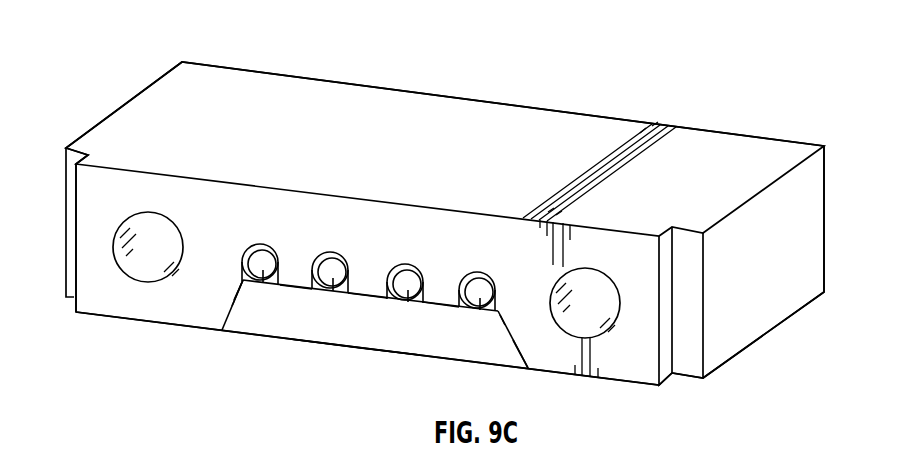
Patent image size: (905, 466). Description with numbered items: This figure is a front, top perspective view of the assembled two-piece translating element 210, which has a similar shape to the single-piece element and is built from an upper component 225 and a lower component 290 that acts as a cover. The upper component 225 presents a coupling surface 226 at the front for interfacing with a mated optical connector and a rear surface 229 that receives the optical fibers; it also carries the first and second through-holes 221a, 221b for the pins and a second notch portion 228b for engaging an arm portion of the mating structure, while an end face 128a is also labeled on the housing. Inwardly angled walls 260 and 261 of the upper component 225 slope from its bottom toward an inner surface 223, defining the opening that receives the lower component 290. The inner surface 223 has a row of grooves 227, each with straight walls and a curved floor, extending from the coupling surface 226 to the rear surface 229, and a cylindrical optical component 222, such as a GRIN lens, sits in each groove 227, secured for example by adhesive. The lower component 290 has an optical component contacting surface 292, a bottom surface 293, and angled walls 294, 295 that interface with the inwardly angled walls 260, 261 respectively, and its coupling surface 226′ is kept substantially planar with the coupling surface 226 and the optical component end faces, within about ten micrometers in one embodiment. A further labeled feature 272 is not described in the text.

The two-piece translating element 210 is at (568, 73).
The rear surface 229 is at (247, 71).
The upper component 225 is at (702, 140).
The second notch portion 228b is at (72, 207).
The end face 128a is at (688, 343).
The coupling surface 226 is at (162, 307).
The coupling surface of the lower component 226′ is at (360, 337).
The bottom surface 293 is at (322, 344).
The lower component 290 is at (383, 352).
The second through-hole 221b is at (119, 233).
The first through-hole 221a is at (589, 268).
The optical component 222 is at (316, 292).
The inwardly angled wall 260 is at (227, 318).
The angled wall 294 is at (241, 282).
The angled wall 295 is at (513, 332).
The inwardly angled wall 261 is at (525, 361).
The groove 227 is at (282, 273).
The channel floor 272 is at (298, 291).
The inner surface 223 is at (371, 294).
The optical component contacting surface 292 is at (458, 299).